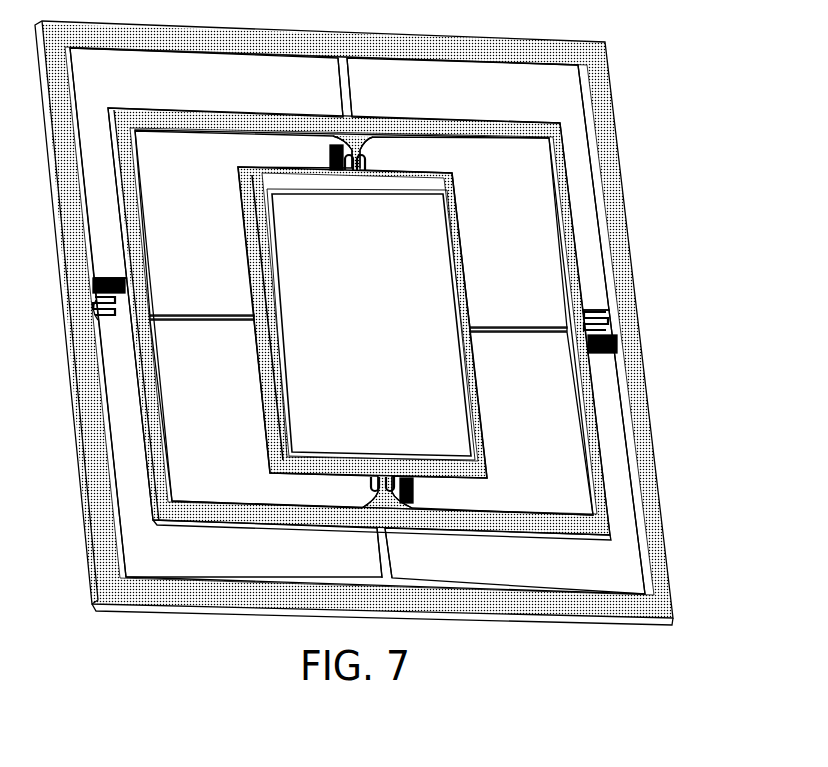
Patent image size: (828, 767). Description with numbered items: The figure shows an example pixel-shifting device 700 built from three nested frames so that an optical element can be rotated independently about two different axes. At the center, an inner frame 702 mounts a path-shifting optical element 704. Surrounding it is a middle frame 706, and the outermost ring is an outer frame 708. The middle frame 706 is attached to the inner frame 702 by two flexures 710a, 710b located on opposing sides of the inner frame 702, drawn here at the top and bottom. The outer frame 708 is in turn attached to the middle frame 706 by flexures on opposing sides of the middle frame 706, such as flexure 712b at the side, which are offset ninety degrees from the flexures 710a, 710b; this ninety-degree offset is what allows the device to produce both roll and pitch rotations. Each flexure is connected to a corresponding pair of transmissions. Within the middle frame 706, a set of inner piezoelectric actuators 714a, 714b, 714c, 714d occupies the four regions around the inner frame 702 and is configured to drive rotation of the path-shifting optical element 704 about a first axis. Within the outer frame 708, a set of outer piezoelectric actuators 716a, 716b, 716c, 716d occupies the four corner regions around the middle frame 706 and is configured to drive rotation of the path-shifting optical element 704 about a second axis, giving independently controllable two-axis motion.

The pixel-shifting device 700 is at (397, 323).
The inner frame 702 is at (242, 183).
The path-shifting optical element 704 is at (260, 240).
The middle frame 706 is at (563, 190).
The outer frame 708 is at (615, 112).
The flexure 710a is at (373, 148).
The flexure 710b is at (372, 497).
The flexure 712b is at (108, 310).
The inner piezoelectric actuator 714a is at (187, 163).
The inner piezoelectric actuator 714b is at (548, 174).
The inner piezoelectric actuator 714c is at (222, 494).
The inner piezoelectric actuator 714d is at (580, 508).
The outer piezoelectric actuator 716a is at (121, 76).
The outer piezoelectric actuator 716b is at (576, 88).
The outer piezoelectric actuator 716c is at (176, 576).
The outer piezoelectric actuator 716d is at (635, 590).